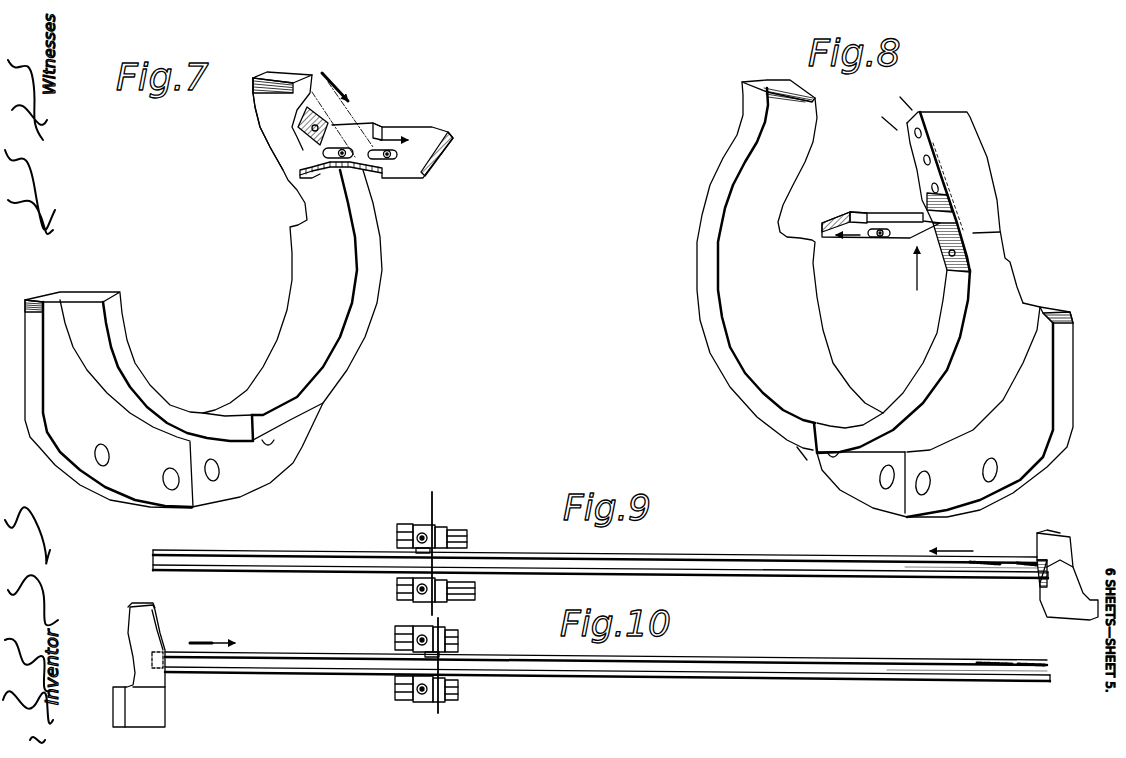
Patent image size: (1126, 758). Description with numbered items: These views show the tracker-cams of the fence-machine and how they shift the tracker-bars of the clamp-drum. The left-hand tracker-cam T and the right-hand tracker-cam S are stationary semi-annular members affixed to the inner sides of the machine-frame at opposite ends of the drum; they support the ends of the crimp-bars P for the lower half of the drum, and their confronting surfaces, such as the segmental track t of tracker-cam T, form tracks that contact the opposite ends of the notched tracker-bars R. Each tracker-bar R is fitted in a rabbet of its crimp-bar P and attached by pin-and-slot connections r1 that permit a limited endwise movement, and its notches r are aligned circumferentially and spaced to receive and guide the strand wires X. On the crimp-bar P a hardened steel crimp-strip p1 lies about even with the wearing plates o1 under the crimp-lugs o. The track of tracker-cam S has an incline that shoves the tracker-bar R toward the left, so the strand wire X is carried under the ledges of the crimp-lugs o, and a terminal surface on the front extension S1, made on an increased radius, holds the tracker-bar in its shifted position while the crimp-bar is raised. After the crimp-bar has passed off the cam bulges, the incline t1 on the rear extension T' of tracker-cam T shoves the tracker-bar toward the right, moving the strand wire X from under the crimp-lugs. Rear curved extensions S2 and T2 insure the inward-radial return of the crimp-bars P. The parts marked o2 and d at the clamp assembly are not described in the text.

In FIG. 7, the left-hand tracker-cam T is at (191, 292).
In FIG. 10, the left-hand tracker-cam T is at (161, 666).
In FIG. 7, the segmental track t is at (367, 307).
In FIG. 10, the segmental track t is at (167, 690).
In FIG. 7, the rear extension T' is at (261, 135).
In FIG. 7, the rear curved extension T2 is at (279, 78).
In FIG. 10, the rear curved extension T2 is at (130, 605).
In FIG. 7, the incline t1 is at (339, 105).
In FIG. 10, the incline t1 is at (160, 629).
In FIG. 7, the tracker-bar R is at (420, 124).
In FIG. 8, the tracker-bar R is at (840, 201).
In FIG. 9, the tracker-bar R is at (725, 560).
In FIG. 10, the tracker-bar R is at (727, 660).
In FIG. 7, the notch r is at (383, 122).
In FIG. 8, the notch r is at (870, 192).
In FIG. 9, the notch r is at (470, 555).
In FIG. 10, the notch r is at (446, 657).
In FIG. 7, the pin-and-slot connection r1 is at (392, 160).
In FIG. 8, the pin-and-slot connection r1 is at (887, 231).
In FIG. 8, the right-hand tracker-cam S is at (943, 313).
In FIG. 9, the right-hand tracker-cam S is at (1046, 603).
In FIG. 8, the front extension S1 is at (977, 142).
In FIG. 9, the front extension S1 is at (1050, 572).
In FIG. 8, the rear curved extension S2 is at (815, 98).
In FIG. 9, the rear curved extension S2 is at (1037, 535).
In FIG. 9, the crimp-bar P is at (797, 578).
In FIG. 10, the crimp-bar P is at (828, 673).
In FIG. 9, the crimp-strip p1 is at (1013, 546).
In FIG. 10, the crimp-strip p1 is at (1020, 645).
In FIG. 9, the strand wire X is at (431, 533).
In FIG. 10, the strand wire X is at (441, 705).
In FIG. 9, the crimp-lug o is at (418, 528).
In FIG. 10, the crimp-lug o is at (414, 633).
In FIG. 9, the wearing plate o1 is at (450, 533).
In FIG. 10, the wearing plate o1 is at (448, 688).
In FIG. 9, the clamp side block o2 is at (412, 594).
In FIG. 10, the clamp side block o2 is at (410, 692).
In FIG. 9, the clamp end block d is at (467, 540).
In FIG. 10, the clamp end block d is at (405, 688).